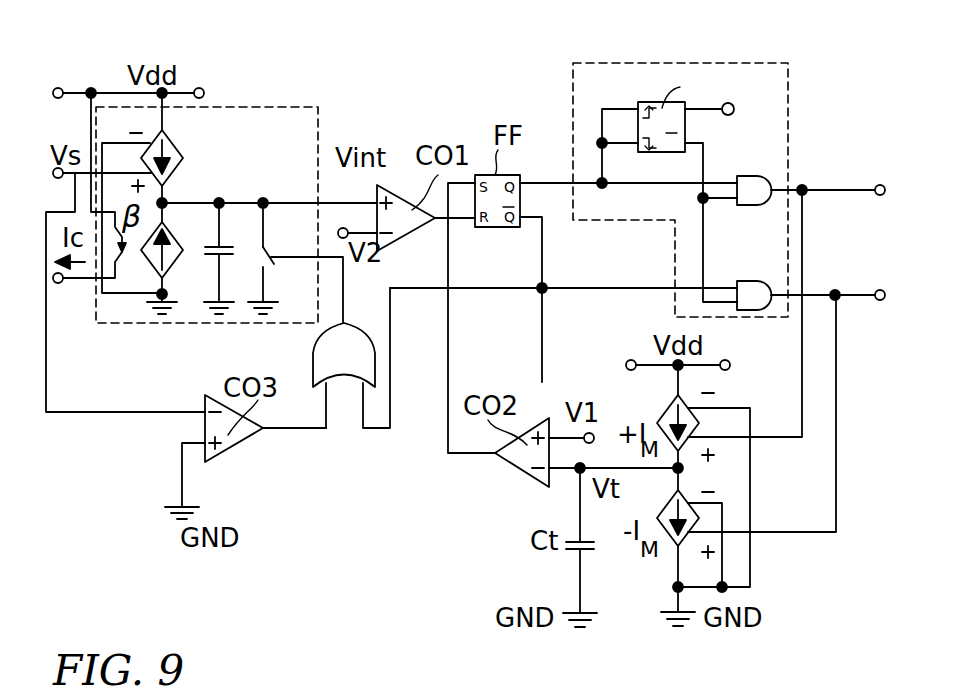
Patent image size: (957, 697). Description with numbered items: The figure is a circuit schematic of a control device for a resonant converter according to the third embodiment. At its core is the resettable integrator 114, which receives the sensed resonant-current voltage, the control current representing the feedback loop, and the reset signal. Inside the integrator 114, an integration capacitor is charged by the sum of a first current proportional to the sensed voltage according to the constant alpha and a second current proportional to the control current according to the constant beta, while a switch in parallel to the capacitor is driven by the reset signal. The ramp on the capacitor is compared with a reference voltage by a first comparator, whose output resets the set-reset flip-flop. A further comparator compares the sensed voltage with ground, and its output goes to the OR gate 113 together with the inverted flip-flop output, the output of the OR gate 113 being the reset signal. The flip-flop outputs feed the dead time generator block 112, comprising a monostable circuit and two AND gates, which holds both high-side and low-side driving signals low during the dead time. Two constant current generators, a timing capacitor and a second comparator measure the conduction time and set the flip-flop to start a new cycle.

The dead time generator block 112 is at (758, 65).
The OR gate 113 is at (340, 380).
The resettable integrator 114 is at (292, 107).